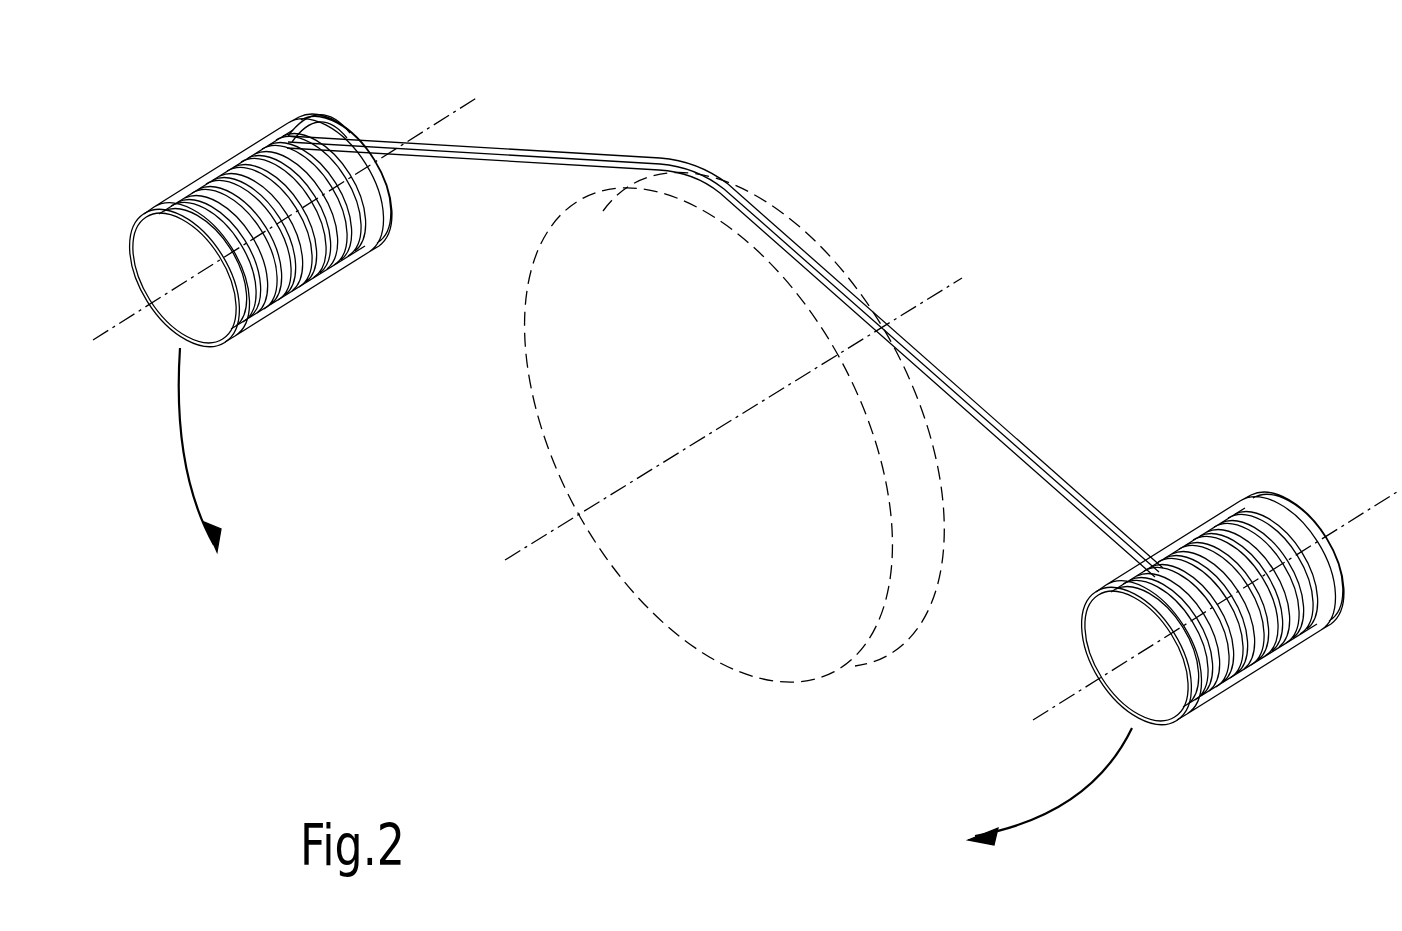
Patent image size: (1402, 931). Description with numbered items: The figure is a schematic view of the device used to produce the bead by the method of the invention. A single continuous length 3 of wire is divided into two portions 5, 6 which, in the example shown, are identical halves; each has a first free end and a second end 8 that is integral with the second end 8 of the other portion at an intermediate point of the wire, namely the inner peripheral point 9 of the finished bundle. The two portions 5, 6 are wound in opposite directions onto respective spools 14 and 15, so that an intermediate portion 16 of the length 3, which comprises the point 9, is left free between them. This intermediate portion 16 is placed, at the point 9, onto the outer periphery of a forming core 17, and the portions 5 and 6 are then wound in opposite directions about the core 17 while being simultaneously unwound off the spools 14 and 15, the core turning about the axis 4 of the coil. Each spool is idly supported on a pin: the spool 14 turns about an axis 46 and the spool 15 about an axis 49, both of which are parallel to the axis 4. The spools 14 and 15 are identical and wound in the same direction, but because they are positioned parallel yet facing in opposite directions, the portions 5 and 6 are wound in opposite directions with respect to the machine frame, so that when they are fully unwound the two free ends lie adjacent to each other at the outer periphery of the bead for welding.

The length of wire 3 is at (725, 312).
The axis 4 is at (934, 292).
The portion 5 is at (1184, 620).
The portion 6 is at (285, 277).
The second end 8 is at (665, 158).
The inner peripheral point 9 is at (712, 168).
The spool 14 is at (1162, 703).
The spool 15 is at (210, 327).
The intermediate portion 16 is at (592, 153).
The forming core 17 is at (708, 435).
The axis 46 is at (1341, 523).
The axis 49 is at (460, 97).